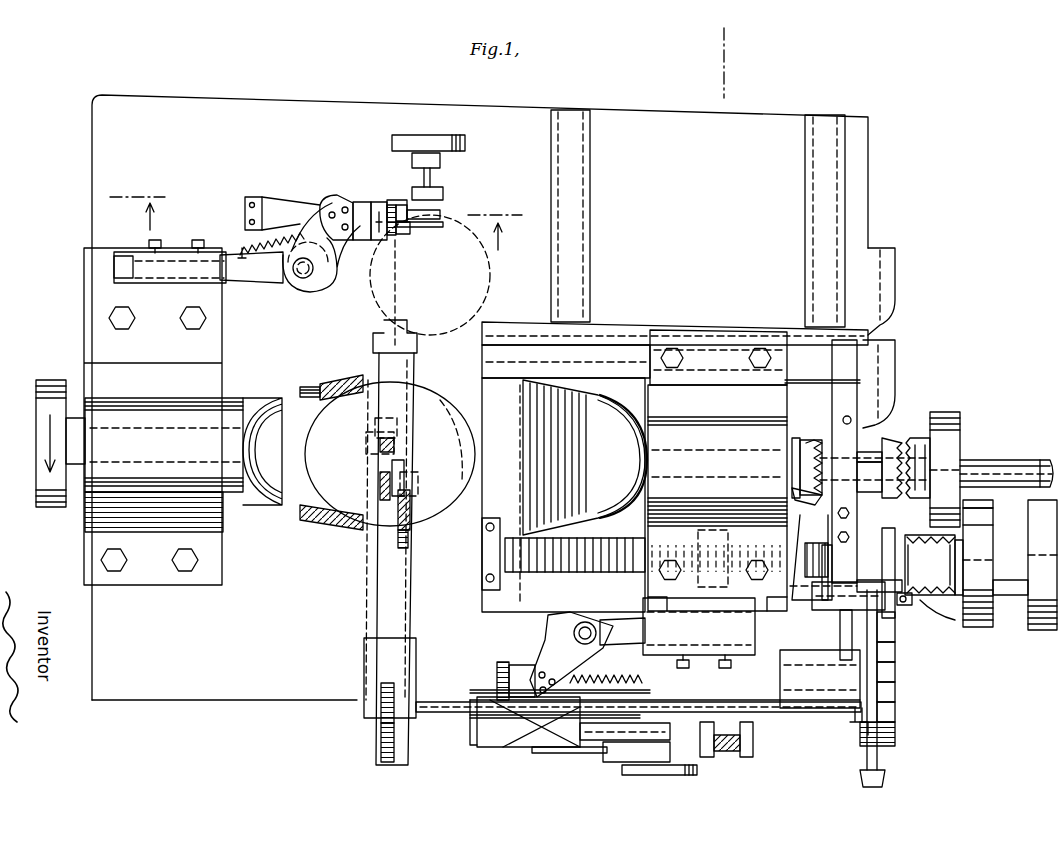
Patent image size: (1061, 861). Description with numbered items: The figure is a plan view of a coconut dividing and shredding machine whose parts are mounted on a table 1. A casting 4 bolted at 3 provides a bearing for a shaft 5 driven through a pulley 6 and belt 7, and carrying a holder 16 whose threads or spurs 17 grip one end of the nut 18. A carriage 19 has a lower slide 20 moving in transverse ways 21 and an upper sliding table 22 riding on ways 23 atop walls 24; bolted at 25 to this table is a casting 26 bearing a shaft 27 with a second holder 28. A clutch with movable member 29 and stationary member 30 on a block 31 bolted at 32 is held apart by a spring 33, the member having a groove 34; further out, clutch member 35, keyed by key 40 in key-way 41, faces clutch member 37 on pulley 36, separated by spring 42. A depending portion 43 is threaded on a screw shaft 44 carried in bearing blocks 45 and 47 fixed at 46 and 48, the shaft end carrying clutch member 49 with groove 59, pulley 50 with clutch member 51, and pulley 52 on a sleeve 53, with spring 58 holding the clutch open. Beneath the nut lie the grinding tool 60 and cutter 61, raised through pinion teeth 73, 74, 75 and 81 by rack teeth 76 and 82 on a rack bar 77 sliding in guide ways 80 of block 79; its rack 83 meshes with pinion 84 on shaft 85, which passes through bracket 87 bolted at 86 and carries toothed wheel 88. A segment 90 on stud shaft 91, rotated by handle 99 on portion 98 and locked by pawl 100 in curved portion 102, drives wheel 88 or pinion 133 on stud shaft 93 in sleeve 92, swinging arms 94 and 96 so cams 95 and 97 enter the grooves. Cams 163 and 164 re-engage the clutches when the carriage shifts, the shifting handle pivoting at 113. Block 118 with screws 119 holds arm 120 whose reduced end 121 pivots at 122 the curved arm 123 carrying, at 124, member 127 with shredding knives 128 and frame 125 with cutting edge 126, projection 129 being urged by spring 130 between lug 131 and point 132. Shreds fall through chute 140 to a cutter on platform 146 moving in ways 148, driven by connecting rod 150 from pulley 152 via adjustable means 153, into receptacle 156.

The table 1 is at (480, 397).
The bolting point of casting 3 is at (180, 318).
The casting 4 is at (92, 337).
The shaft 5 is at (78, 418).
The pulley 6 is at (740, 60).
The belt 7 is at (316, 223).
The holder 16 is at (270, 395).
The threads or spurs 17 is at (332, 382).
The nut 18 is at (440, 400).
The carriage 19 is at (633, 316).
The lower supporting member or slide 20 is at (618, 410).
The ways 21 is at (572, 212).
The upper sliding table 22 is at (734, 330).
The ways 23 is at (509, 340).
The walls 24 is at (502, 385).
The bolting point of casting 26 25 is at (748, 355).
The casting 26 is at (717, 498).
The shaft 27 is at (978, 460).
The holder 28 is at (600, 400).
The movable clutch member 29 is at (805, 440).
The stationary clutch member 30 is at (840, 388).
The block 31 is at (860, 440).
The bolting point of block 31 32 is at (858, 420).
The spring 33 is at (820, 440).
The circumferential groove 34 is at (798, 440).
The clutch member 35 is at (920, 420).
The pulley 36 is at (960, 420).
The clutch member 37 is at (935, 435).
The key 40 is at (885, 500).
The key-way 41 is at (1030, 460).
The spring 42 is at (905, 500).
The depending portion 43 is at (733, 540).
The worm or screw shaft 44 is at (576, 572).
The bearing block 45 is at (492, 518).
The securing point of bearing block 45 46 is at (494, 530).
The bearing block 47 is at (828, 570).
The securing point of bearing block 47 48 is at (858, 542).
The clutch member 49 is at (927, 602).
The pulley 50 is at (993, 615).
The clutch member 51 is at (965, 530).
The pulley 52 is at (1042, 630).
The sleeve 53 is at (993, 600).
The spring 58 is at (937, 592).
The circumferential groove 59 is at (883, 540).
The grinding tool 60 is at (412, 465).
The cutter 61 is at (387, 402).
The set of teeth of pinion 69 73 is at (420, 490).
The set of teeth of pinion 70 74 is at (365, 442).
The set of teeth of pinion 69 75 is at (398, 498).
The rack teeth 76 is at (412, 535).
The rack bar 77 is at (412, 594).
The block 79 is at (380, 335).
The guide ways 80 is at (438, 340).
The set of teeth of pinion 70 81 is at (400, 450).
The rack teeth 82 is at (378, 490).
The rack 83 is at (398, 748).
The pinion 84 is at (408, 685).
The shaft 85 is at (460, 712).
The bolting point of bracket 87 86 is at (880, 650).
The bracket 87 is at (848, 635).
The toothed wheel 88 is at (895, 742).
The segment 90 is at (890, 665).
The stud shaft 91 is at (890, 685).
The sleeve portion 92 is at (830, 605).
The stud shaft 93 is at (908, 605).
The arm 94 is at (798, 525).
The cam 95 is at (811, 502).
The arm 96 is at (962, 555).
The cam 97 is at (965, 505).
The inwardly extending portion 98 is at (890, 715).
The handle 99 is at (880, 765).
The spring-pressed pawl 100 is at (858, 722).
The curved portion 102 is at (898, 675).
The pivot of handle 110 113 is at (752, 735).
The block 118 is at (180, 250).
The screws 119 is at (200, 244).
The supporting arm 120 is at (250, 282).
The reduced end portion 121 is at (287, 282).
The pivot 122 is at (315, 268).
The curved arm 123 is at (317, 203).
The securing point of member 127 124 is at (350, 200).
The frame 125 is at (385, 205).
The cutting edge 126 is at (400, 210).
The member 127 is at (400, 232).
The shredding knives 128 is at (410, 231).
The projection 129 is at (400, 200).
The spring 130 is at (273, 197).
The lug 131 is at (300, 205).
The point 132 is at (246, 252).
The pinion 133 is at (905, 642).
The conveying chute 140 is at (490, 747).
The platform 146 is at (552, 752).
The ways 148 is at (605, 755).
The connecting rod 150 is at (440, 228).
The pulley 152 is at (465, 140).
The adjusting means / bearing 153 is at (445, 205).
The receptacle 156 is at (477, 745).
The cam 163 is at (904, 288).
The cam 164 is at (895, 360).